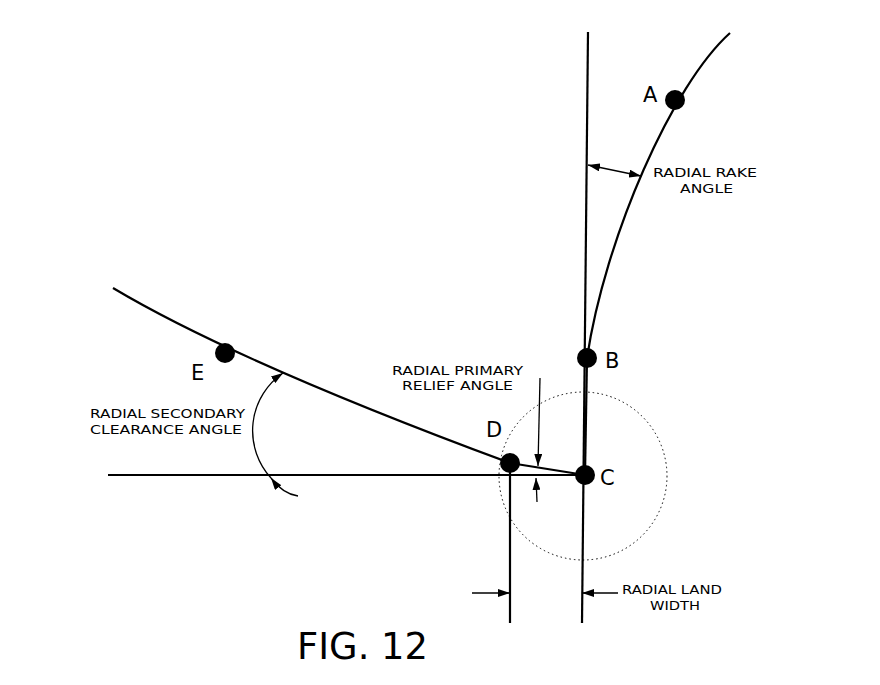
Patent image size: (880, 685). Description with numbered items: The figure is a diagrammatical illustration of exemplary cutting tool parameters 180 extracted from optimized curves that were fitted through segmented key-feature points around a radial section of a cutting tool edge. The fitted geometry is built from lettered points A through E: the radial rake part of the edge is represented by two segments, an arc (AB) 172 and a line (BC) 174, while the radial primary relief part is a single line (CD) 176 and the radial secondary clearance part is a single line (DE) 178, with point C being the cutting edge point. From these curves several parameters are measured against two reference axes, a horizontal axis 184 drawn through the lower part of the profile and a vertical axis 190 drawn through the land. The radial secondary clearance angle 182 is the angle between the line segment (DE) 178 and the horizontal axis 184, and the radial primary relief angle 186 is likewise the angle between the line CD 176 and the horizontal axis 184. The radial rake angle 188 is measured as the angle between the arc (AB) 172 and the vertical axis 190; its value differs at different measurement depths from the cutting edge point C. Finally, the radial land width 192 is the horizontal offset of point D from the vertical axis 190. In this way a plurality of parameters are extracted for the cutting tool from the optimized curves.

The cutting tool parameters 180 is at (165, 61).
The arc (AB) 172 is at (618, 240).
The line (BC) 174 is at (587, 441).
The line (CD) 176 is at (547, 468).
The line (DE) 178 is at (356, 402).
The radial secondary clearance angle 182 is at (300, 368).
The horizontal axis 184 is at (157, 477).
The radial primary relief angle 186 is at (540, 379).
The radial rake angle 188 is at (620, 168).
The vertical axis 190 is at (588, 77).
The radial land width 192 is at (547, 594).